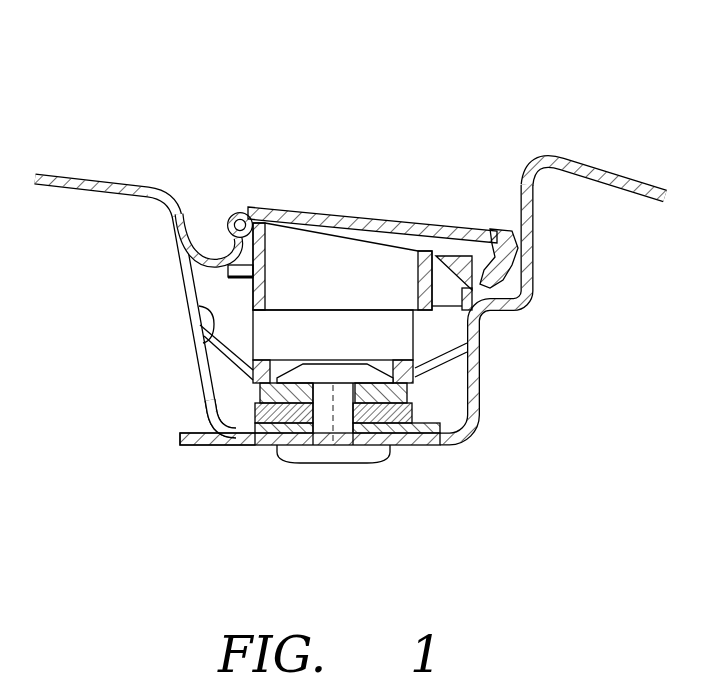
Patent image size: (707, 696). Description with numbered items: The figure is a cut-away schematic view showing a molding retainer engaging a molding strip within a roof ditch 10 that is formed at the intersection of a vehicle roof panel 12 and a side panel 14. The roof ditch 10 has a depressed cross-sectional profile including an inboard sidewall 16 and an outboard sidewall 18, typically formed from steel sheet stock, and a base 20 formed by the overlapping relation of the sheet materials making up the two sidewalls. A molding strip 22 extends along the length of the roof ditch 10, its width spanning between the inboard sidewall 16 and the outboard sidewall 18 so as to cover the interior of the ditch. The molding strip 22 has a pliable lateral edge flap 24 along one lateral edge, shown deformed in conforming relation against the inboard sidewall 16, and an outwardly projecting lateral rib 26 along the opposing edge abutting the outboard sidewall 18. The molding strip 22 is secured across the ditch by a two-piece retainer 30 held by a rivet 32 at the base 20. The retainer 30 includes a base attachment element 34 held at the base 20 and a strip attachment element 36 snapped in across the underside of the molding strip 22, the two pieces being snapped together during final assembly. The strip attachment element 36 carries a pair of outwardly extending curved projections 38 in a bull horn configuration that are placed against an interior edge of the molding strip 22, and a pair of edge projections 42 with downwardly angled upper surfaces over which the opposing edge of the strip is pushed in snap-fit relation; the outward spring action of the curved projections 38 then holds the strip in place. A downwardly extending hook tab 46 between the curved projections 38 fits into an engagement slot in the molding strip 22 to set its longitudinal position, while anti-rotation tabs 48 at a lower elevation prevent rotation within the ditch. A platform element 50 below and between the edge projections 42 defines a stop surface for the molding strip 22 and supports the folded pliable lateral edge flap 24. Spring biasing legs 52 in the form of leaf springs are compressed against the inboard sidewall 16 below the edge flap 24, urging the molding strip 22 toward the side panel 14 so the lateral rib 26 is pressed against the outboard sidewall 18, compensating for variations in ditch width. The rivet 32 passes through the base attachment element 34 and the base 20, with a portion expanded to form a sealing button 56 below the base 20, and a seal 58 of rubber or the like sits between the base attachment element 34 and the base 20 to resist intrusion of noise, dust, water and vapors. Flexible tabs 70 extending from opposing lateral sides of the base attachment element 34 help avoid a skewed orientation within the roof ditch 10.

The roof ditch 10 is at (432, 106).
The vehicle roof panel 12 is at (87, 178).
The side panel 14 is at (615, 168).
The inboard sidewall 16 is at (190, 338).
The outboard sidewall 18 is at (537, 208).
The base 20 is at (440, 447).
The molding strip 22 is at (372, 208).
The pliable lateral edge flap 24 is at (203, 213).
The lateral rib 26 is at (513, 226).
The retainer 30 is at (418, 390).
The rivet 32 is at (333, 440).
The base attachment element 34 is at (247, 412).
The strip attachment element 36 is at (253, 300).
The curved projections 38 is at (462, 253).
The edge projections 42 is at (232, 207).
The hook tab 46 is at (523, 291).
The anti-rotation tabs 48 is at (460, 307).
The platform element 50 is at (228, 270).
The spring biasing legs 52 is at (183, 302).
The sealing button 56 is at (363, 467).
The seal 58 is at (203, 433).
The flexible tabs 70 is at (217, 370).